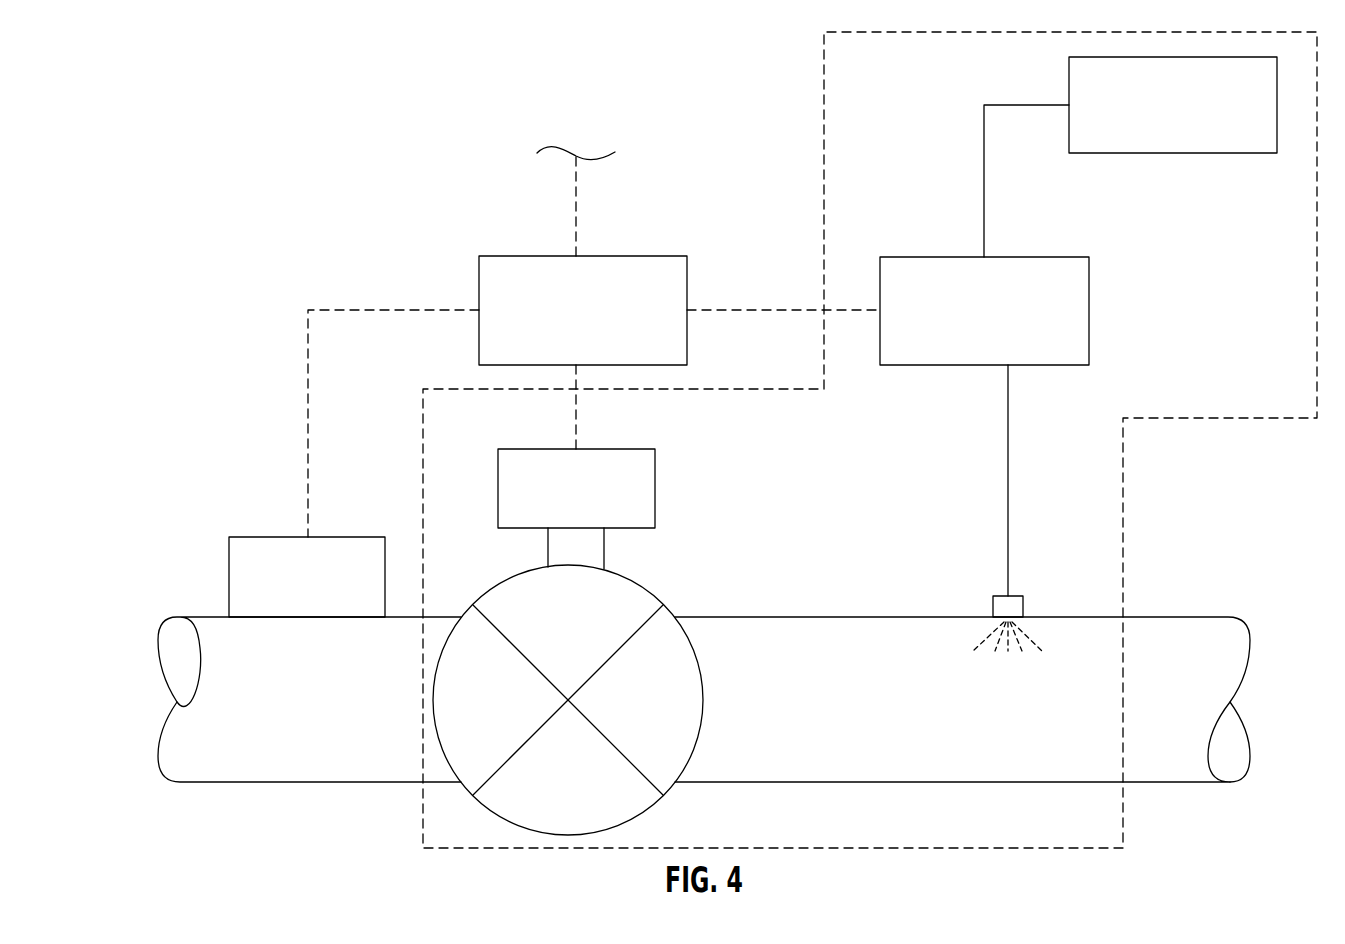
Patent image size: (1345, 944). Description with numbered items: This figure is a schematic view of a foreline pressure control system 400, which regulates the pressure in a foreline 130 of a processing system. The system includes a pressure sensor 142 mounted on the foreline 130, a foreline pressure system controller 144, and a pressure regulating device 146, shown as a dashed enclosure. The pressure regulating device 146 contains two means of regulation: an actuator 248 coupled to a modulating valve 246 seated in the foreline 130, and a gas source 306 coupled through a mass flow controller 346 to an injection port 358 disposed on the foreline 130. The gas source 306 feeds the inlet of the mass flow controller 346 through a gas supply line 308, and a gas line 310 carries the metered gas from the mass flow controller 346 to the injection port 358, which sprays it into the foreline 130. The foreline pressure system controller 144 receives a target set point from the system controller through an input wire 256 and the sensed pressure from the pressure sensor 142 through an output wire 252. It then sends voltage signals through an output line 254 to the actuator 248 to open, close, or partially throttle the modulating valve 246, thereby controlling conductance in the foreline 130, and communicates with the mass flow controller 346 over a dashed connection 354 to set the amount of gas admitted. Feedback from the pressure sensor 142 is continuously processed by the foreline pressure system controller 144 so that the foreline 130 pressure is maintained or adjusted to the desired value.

The foreline pressure control system 400 is at (230, 160).
The foreline 130 is at (888, 713).
The pressure sensor 142 is at (327, 593).
The foreline pressure system controller 144 is at (603, 325).
The pressure regulating device 146 is at (823, 88).
The modulating valve 246 is at (668, 713).
The actuator 248 is at (596, 504).
The output wire 252 is at (392, 310).
The output line 254 is at (577, 382).
The input wire 256 is at (577, 208).
The gas source 306 is at (1193, 119).
The gas supply line 308 is at (984, 232).
The gas line 310 is at (1008, 492).
The mass flow controller 346 is at (1005, 325).
The pump signal line 354 is at (752, 310).
The injection port 358 is at (1010, 596).